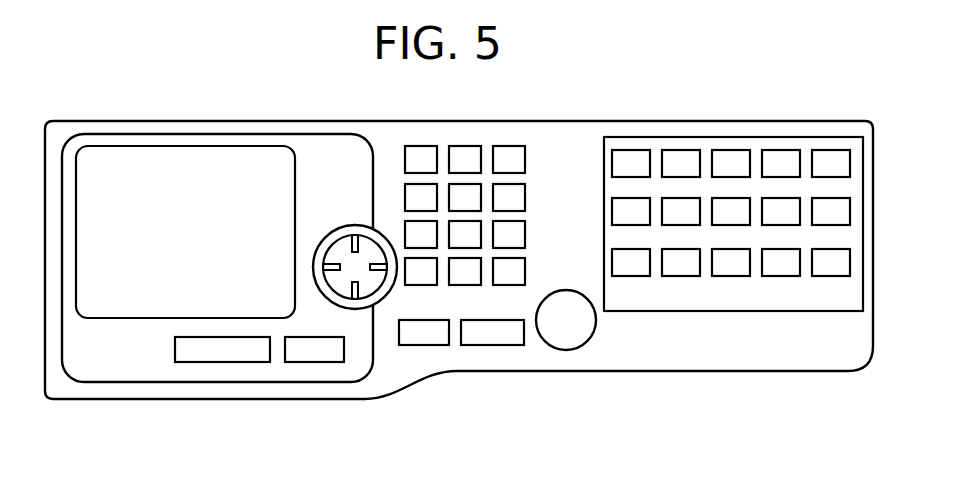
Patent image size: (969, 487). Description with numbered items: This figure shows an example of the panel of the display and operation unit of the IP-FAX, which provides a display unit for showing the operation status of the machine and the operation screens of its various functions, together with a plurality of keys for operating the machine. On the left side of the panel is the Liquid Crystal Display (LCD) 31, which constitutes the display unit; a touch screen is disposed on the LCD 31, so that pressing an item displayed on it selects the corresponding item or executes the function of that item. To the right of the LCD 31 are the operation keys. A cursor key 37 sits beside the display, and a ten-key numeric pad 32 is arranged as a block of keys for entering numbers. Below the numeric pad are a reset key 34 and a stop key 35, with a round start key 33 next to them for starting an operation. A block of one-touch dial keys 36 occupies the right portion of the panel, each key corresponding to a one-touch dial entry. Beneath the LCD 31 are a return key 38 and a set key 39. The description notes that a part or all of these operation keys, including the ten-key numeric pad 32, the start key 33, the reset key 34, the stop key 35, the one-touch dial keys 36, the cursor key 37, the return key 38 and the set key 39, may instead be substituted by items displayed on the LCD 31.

The Liquid Crystal Display (LCD) 31 is at (232, 173).
The ten-key numeric pad 32 is at (485, 138).
The start key 33 is at (563, 350).
The reset key 34 is at (423, 345).
The stop key 35 is at (492, 345).
The one-touch dial keys 36 is at (702, 150).
The cursor key 37 is at (348, 214).
The return key 38 is at (223, 363).
The set key 39 is at (315, 363).